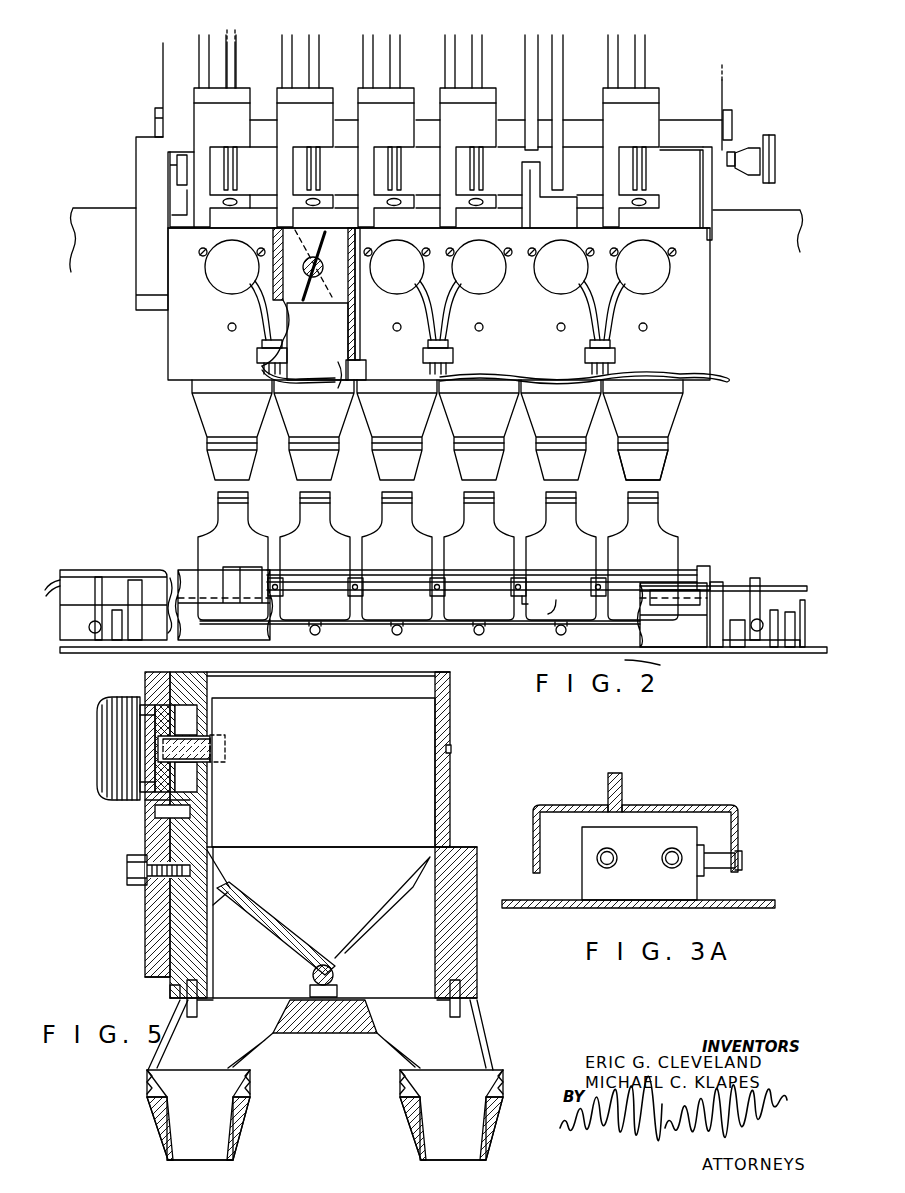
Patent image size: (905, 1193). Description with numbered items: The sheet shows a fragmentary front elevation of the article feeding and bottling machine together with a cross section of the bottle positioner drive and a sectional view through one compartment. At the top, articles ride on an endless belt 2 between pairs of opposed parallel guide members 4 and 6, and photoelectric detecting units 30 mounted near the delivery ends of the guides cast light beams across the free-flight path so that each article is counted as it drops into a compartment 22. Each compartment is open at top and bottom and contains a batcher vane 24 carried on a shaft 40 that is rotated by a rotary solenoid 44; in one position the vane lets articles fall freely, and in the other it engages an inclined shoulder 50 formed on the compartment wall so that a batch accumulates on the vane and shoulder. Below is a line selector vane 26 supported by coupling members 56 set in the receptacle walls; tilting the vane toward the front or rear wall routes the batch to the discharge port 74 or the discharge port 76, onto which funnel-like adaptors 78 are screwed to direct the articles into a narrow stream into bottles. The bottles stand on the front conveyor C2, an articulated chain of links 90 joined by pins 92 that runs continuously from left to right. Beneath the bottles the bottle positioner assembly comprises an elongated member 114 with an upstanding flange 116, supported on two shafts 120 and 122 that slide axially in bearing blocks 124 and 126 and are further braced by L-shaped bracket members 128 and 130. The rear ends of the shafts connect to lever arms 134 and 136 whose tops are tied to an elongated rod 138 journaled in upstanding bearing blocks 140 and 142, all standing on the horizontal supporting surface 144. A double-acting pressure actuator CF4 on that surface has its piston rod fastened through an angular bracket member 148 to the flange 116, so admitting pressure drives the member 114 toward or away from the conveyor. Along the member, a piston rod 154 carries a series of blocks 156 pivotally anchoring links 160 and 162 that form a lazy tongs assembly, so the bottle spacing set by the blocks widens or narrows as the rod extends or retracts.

In FIG. 2, the endless belt 2 is at (685, 188).
In FIG. 2, the guide member 4 is at (175, 74).
In FIG. 2, the guide member 6 is at (250, 40).
In FIG. 2, the compartment 22 is at (360, 298).
In FIG. 5, the compartment 22 is at (448, 790).
In FIG. 2, the batcher vane 24 is at (330, 240).
In FIG. 5, the batcher vane 24 is at (410, 713).
In FIG. 2, the line selector vane 26 is at (338, 372).
In FIG. 5, the line selector vane 26 is at (268, 920).
In FIG. 2, the photoelectric detecting unit 30 is at (184, 122).
In FIG. 2, the shaft 40 is at (324, 267).
In FIG. 5, the shaft 40 is at (207, 742).
In FIG. 2, the rotary solenoid 44 is at (226, 280).
In FIG. 5, the rotary solenoid 44 is at (97, 753).
In FIG. 2, the inclined shoulder 50 is at (298, 297).
In FIG. 2, the coupling member 56 is at (366, 370).
In FIG. 5, the coupling member 56 is at (338, 966).
In FIG. 5, the discharge port 74 is at (396, 1057).
In FIG. 2, the discharge port 76 is at (662, 418).
In FIG. 5, the discharge port 76 is at (258, 1050).
In FIG. 2, the adaptor 78 is at (657, 468).
In FIG. 5, the adaptor 78 is at (248, 1122).
In FIG. 2, the link 90 is at (504, 628).
In FIG. 2, the pin 92 is at (566, 631).
In FIG. 3A, the elongated member 114 is at (560, 808).
In FIG. 3A, the upstanding flange 116 is at (608, 780).
In FIG. 2, the shaft 120 is at (766, 625).
In FIG. 2, the shaft 122 is at (92, 636).
In FIG. 2, the bearing block 124 is at (791, 656).
In FIG. 2, the bearing block 126 is at (116, 646).
In FIG. 2, the L-shaped bracket member 128 is at (748, 660).
In FIG. 2, the L-shaped bracket member 130 is at (95, 617).
In FIG. 2, the lever arm 134 is at (752, 586).
In FIG. 2, the lever arm 136 is at (96, 600).
In FIG. 2, the elongated rod 138 is at (724, 590).
In FIG. 2, the bearing block 140 is at (718, 580).
In FIG. 2, the bearing block 142 is at (135, 580).
In FIG. 2, the horizontal supporting surface 144 is at (493, 656).
In FIG. 3A, the horizontal supporting surface 144 is at (760, 900).
In FIG. 3A, the angular bracket member 148 is at (665, 808).
In FIG. 2, the piston rod 154 is at (464, 590).
In FIG. 2, the block 156 is at (528, 605).
In FIG. 2, the link 160 is at (413, 595).
In FIG. 2, the link 162 is at (375, 578).
In FIG. 2, the front conveyor C2 is at (640, 640).
In FIG. 3A, the pressure actuator CF4 is at (595, 876).